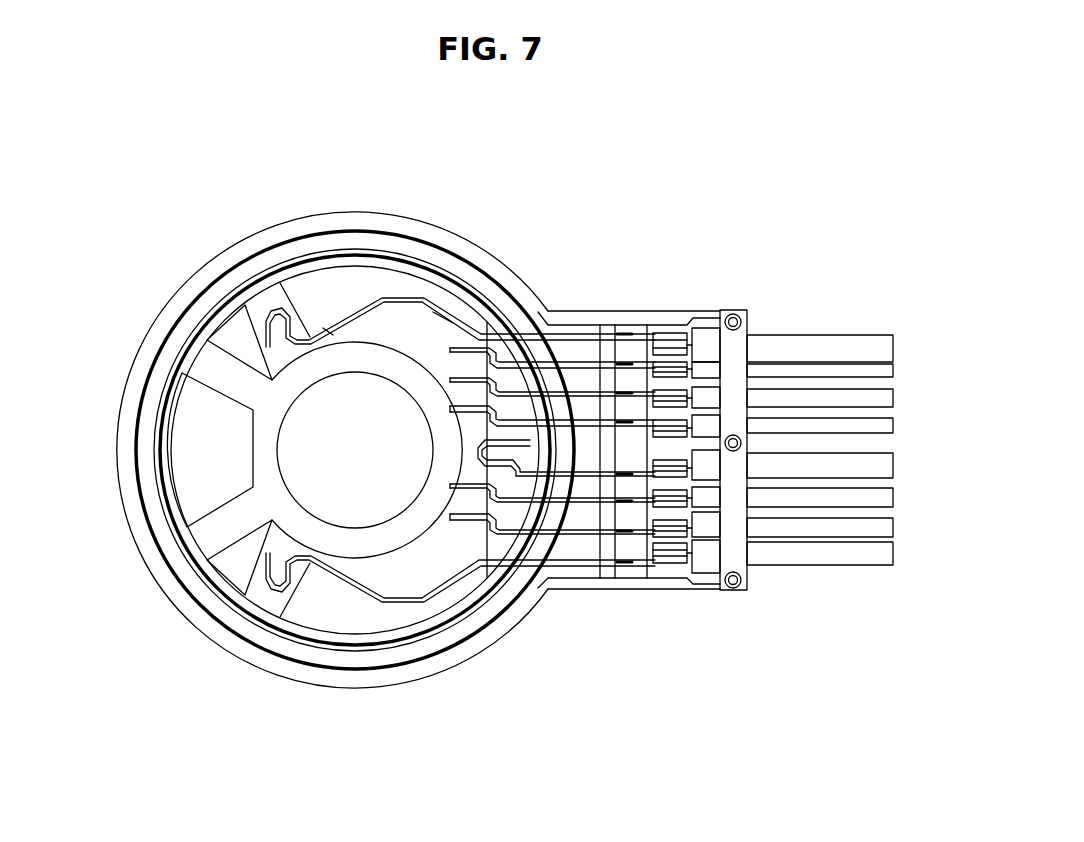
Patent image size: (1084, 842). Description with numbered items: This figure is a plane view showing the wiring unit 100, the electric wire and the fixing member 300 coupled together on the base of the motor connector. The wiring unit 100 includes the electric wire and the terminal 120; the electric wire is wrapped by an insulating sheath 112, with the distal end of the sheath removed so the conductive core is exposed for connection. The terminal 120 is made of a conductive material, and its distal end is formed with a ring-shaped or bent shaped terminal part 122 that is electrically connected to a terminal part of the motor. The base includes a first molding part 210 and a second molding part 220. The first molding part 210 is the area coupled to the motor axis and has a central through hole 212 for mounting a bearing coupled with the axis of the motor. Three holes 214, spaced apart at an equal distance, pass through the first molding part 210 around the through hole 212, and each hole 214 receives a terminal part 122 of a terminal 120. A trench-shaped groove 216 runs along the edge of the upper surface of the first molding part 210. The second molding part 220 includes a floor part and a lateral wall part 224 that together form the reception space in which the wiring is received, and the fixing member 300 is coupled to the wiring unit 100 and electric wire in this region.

The wiring unit 100 is at (848, 326).
The insulating sheath 112 is at (882, 348).
The terminal 120 is at (403, 296).
The terminal part 122 is at (255, 308).
The first molding part 210 is at (186, 630).
The through hole 212 is at (328, 440).
The holes 214 is at (277, 292).
The trench-shaped groove 216 is at (143, 495).
The second molding part 220 is at (614, 604).
The lateral wall part 224 is at (737, 592).
The fixing member 300 is at (746, 550).